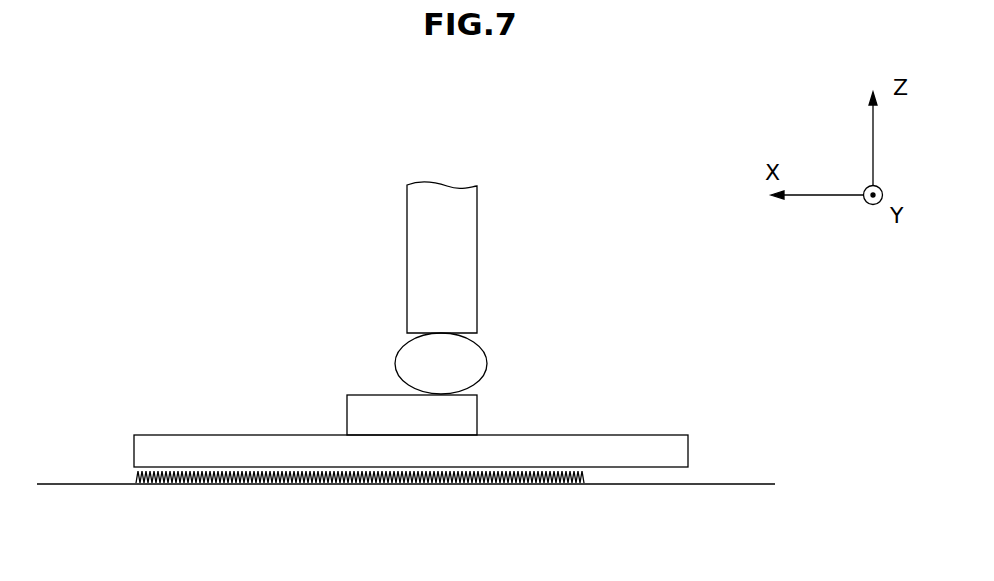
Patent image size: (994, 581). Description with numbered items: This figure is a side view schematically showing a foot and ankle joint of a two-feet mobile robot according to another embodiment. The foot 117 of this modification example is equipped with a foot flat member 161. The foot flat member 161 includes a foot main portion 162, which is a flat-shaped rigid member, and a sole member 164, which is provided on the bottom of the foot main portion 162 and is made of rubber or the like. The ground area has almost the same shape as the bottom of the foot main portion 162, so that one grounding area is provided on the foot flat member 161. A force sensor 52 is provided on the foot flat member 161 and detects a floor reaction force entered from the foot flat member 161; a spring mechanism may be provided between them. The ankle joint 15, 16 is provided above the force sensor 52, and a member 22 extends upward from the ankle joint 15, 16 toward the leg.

The foot 117 is at (493, 332).
The shaft 22 is at (468, 274).
The ankle joint 15 is at (496, 358).
The ankle joint 16 is at (468, 351).
The force sensor 52 is at (467, 419).
The foot flat member 161 is at (493, 446).
The foot main portion 162 is at (688, 453).
The sole member 164 is at (688, 475).